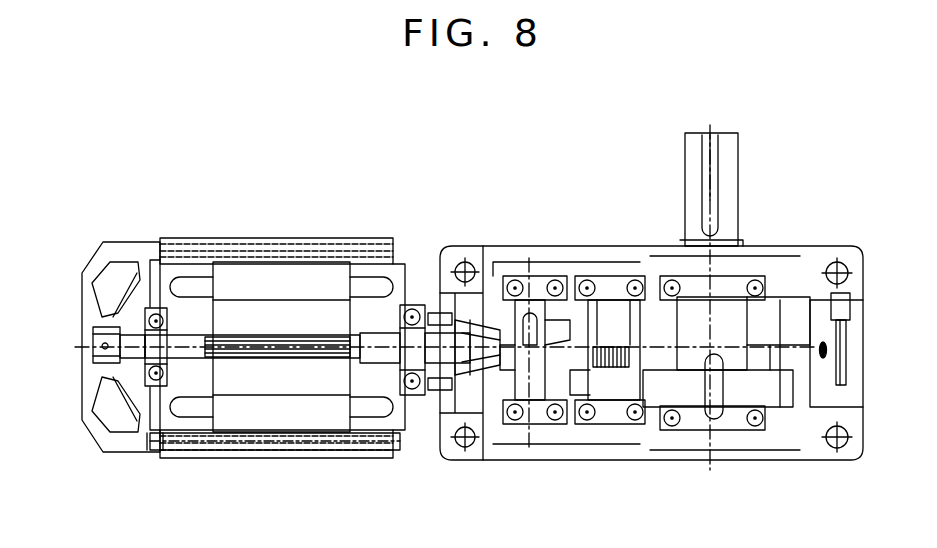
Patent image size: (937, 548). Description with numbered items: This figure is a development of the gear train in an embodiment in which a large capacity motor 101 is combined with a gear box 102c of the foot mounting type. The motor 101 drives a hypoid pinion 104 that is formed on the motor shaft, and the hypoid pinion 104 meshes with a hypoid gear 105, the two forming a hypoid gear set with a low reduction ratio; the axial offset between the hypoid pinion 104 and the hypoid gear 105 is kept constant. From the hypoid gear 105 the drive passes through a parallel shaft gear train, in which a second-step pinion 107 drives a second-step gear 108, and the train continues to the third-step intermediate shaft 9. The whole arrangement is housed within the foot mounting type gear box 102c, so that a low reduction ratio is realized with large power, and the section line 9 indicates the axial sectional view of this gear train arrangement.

The large capacity motor 101 is at (260, 240).
The hypoid pinion 104 is at (435, 250).
The hypoid gear 105 is at (495, 335).
The second-step pinion 107 is at (531, 370).
The second-step gear 108 is at (668, 395).
The gear box of a foot mounting type 102c is at (825, 341).
The third-step intermediate shaft 9 is at (405, 355).